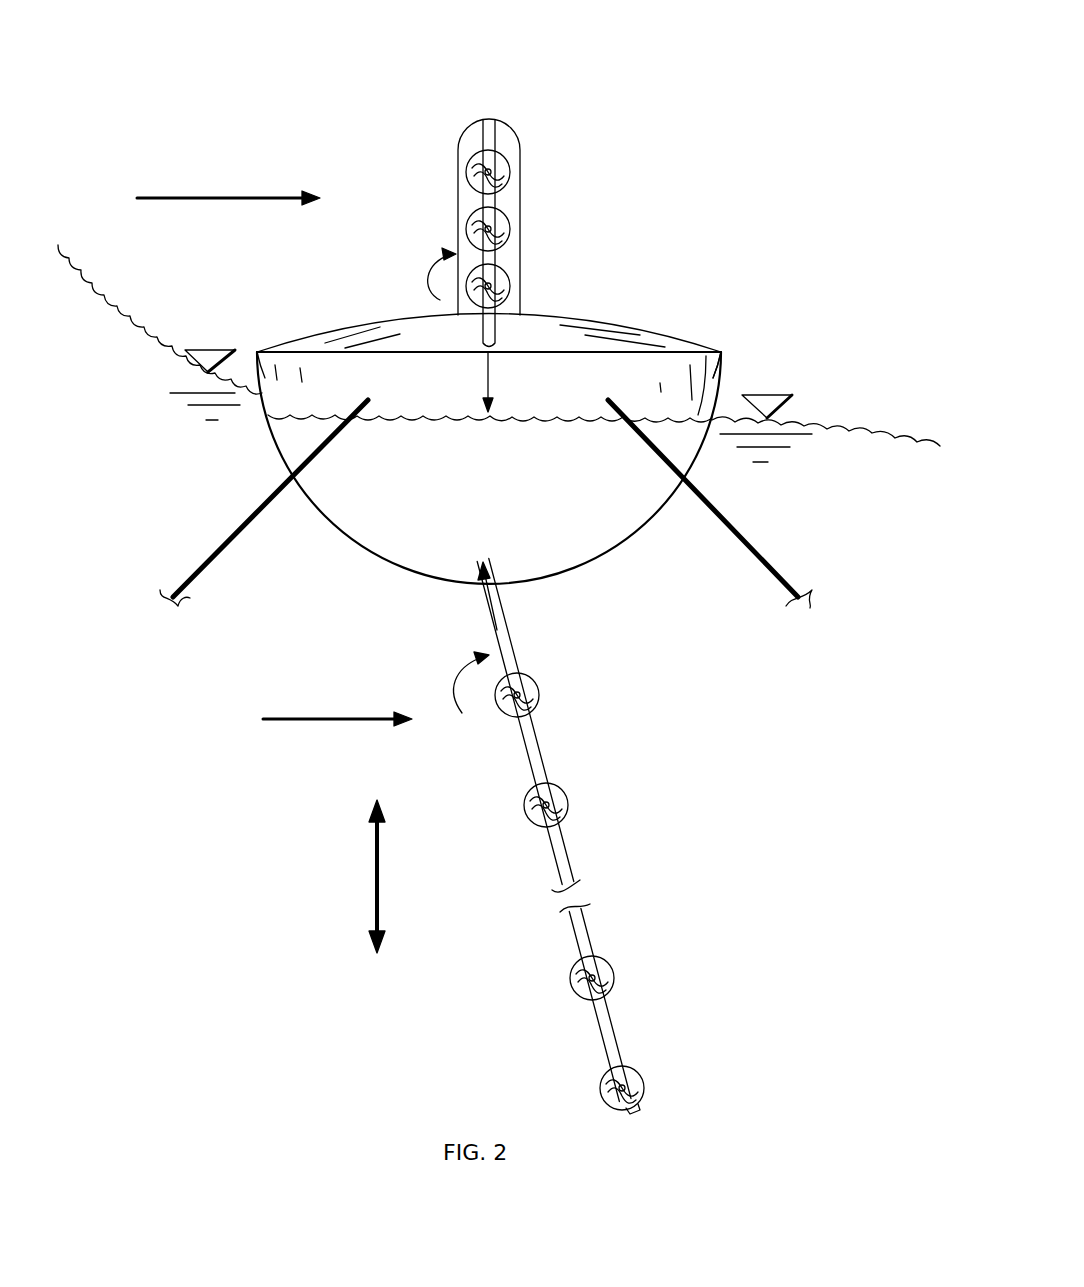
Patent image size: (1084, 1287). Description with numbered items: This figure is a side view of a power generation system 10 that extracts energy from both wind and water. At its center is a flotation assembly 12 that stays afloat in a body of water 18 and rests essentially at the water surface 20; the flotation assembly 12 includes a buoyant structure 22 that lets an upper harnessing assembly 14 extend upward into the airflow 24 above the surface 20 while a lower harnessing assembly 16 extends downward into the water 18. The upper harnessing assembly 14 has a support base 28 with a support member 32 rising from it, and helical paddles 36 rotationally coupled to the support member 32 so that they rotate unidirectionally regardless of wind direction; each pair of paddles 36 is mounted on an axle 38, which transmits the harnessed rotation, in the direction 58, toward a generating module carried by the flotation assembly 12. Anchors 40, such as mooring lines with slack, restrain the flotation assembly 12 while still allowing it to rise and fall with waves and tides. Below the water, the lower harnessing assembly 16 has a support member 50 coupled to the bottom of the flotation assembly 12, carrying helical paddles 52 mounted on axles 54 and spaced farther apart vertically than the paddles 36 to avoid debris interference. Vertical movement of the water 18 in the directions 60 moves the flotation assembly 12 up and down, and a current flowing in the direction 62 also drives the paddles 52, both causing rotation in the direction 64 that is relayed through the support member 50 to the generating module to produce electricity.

The power generation system 10 is at (750, 64).
The flotation assembly 12 is at (618, 546).
The harnessing assembly 14 is at (545, 120).
The harnessing assembly 16 is at (606, 763).
The body of water 18 is at (793, 758).
The surface 20 is at (886, 432).
The buoyant structure 22 is at (722, 372).
The airflow 24 is at (220, 196).
The support base 28 is at (612, 318).
The support member 32 is at (488, 118).
The paddles 36 is at (510, 170).
The axle 38 is at (470, 170).
The anchors 40 is at (244, 532).
The support member 50 is at (508, 628).
The paddles 52 is at (542, 702).
The axle 54 is at (506, 712).
The direction 58 is at (416, 276).
The directions 60 is at (376, 876).
The direction 62 is at (328, 717).
The direction 64 is at (456, 680).